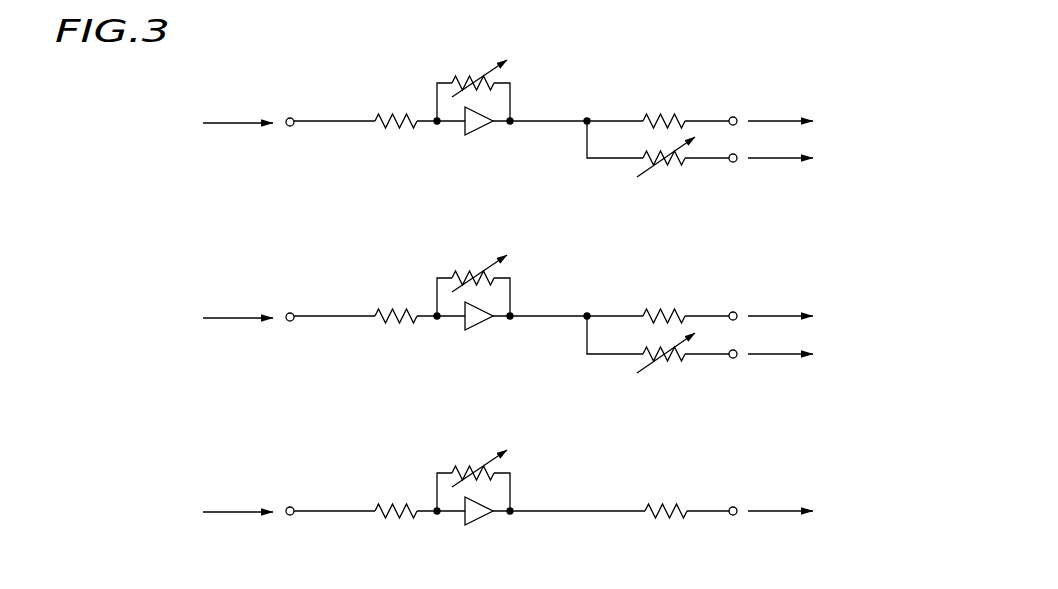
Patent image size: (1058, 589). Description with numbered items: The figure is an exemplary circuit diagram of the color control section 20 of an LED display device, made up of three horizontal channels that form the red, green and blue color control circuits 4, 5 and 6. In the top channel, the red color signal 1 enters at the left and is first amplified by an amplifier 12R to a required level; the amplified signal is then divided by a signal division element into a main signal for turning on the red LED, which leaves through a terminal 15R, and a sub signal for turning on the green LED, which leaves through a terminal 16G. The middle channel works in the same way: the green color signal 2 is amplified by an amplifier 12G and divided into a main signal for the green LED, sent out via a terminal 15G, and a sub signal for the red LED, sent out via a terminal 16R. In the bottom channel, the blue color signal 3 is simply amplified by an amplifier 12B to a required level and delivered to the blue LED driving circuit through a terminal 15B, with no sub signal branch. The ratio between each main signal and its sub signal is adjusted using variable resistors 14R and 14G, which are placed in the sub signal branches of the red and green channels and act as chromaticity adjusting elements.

The red color signal 1 is at (173, 108).
The green color signal 2 is at (173, 303).
The blue color signal 3 is at (174, 498).
The red color control circuit 4 is at (880, 128).
The green color control circuit 5 is at (873, 328).
The blue color control circuit 6 is at (876, 489).
The amplifier 12R is at (483, 126).
The amplifier 12G is at (483, 321).
The amplifier 12B is at (483, 516).
The variable resistor 14R is at (675, 165).
The variable resistor 14G is at (675, 361).
The terminal 15R is at (804, 121).
The terminal 16G is at (805, 158).
The terminal 15G is at (805, 316).
The terminal 16R is at (804, 354).
The terminal 15B is at (804, 511).
The color control section 20 is at (578, 93).